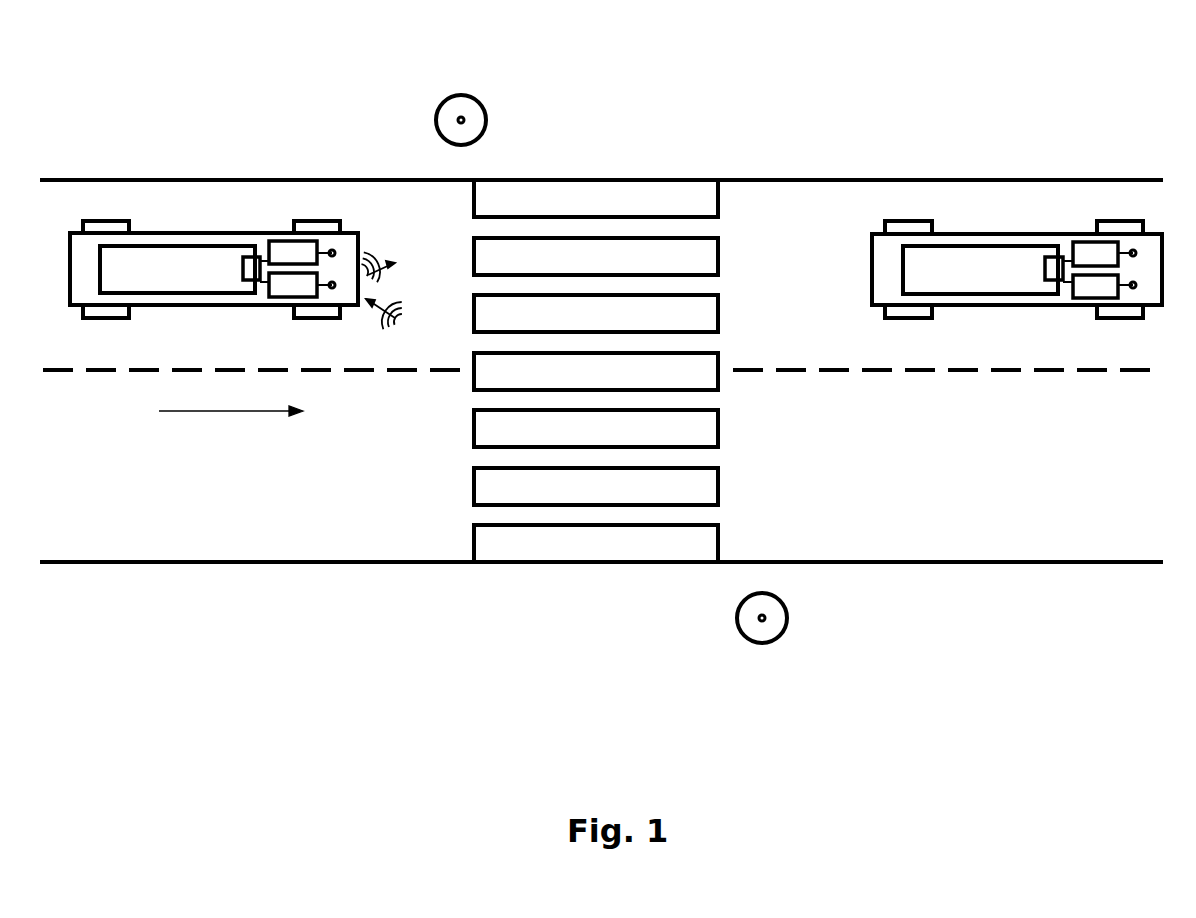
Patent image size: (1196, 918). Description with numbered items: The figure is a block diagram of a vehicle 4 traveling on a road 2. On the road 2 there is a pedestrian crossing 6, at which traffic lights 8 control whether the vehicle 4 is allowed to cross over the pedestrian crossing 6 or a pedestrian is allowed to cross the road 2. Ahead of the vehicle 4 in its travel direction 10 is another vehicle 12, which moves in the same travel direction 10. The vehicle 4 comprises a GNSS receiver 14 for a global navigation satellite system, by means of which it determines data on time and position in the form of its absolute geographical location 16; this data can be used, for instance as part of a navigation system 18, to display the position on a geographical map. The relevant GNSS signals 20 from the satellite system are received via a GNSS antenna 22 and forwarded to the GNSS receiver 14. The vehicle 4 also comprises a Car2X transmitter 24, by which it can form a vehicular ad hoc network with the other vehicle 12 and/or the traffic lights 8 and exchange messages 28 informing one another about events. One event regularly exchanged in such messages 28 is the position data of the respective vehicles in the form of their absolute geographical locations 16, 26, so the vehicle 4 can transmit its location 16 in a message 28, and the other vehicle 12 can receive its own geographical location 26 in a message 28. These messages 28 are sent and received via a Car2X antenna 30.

The road 2 is at (159, 515).
The vehicle 4 is at (175, 233).
The pedestrian crossing 6 is at (533, 488).
The traffic lights 8 is at (462, 94).
The travel direction 10 is at (230, 411).
The other vehicle 12 is at (972, 234).
The GNSS receiver 14 is at (287, 241).
The absolute geographical location 16 is at (262, 260).
The navigation system 18 is at (245, 257).
The GNSS signals 20 is at (332, 250).
The GNSS antenna 22 is at (334, 250).
The Car2X transmitter 24 is at (288, 297).
The absolute geographical location 26 is at (1065, 260).
The messages 28 is at (378, 255).
The Car2X antenna 30 is at (332, 290).